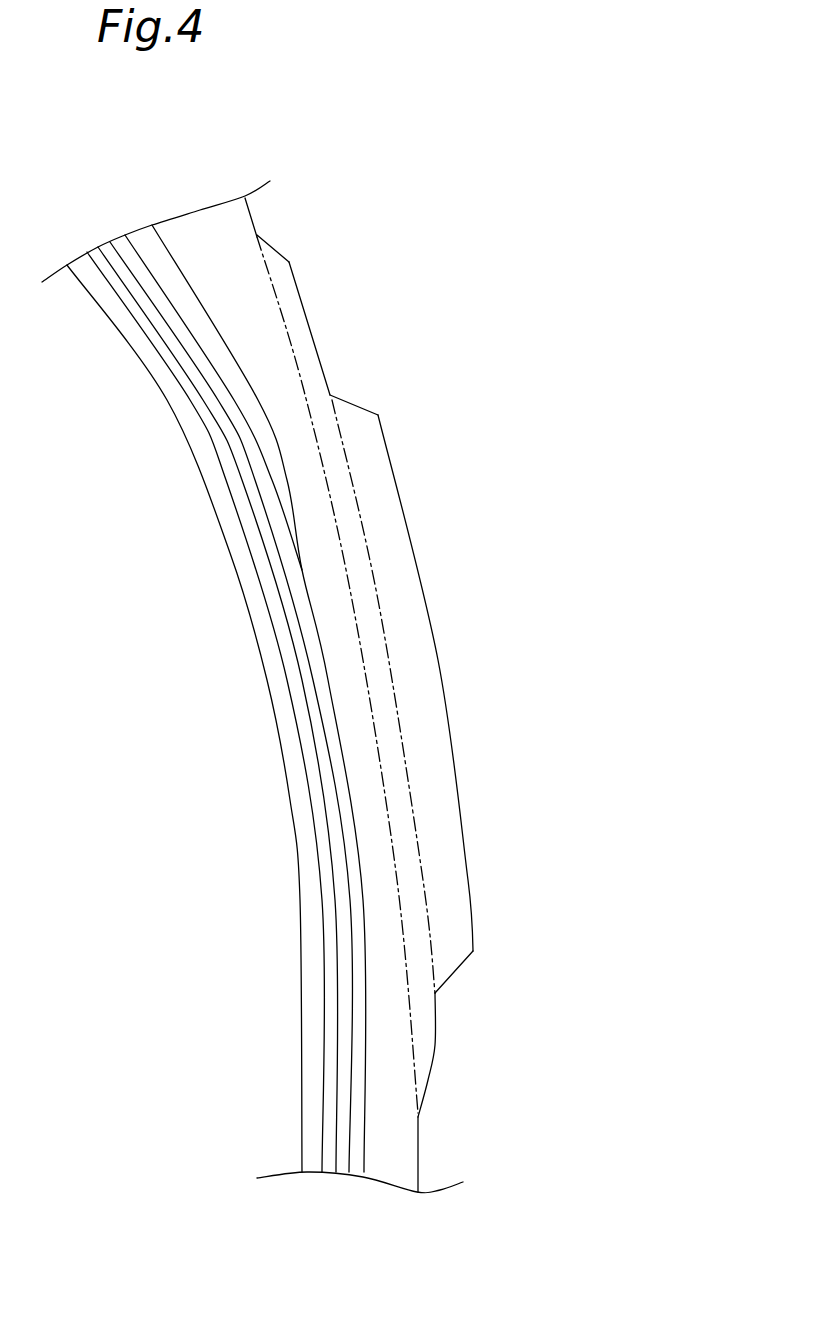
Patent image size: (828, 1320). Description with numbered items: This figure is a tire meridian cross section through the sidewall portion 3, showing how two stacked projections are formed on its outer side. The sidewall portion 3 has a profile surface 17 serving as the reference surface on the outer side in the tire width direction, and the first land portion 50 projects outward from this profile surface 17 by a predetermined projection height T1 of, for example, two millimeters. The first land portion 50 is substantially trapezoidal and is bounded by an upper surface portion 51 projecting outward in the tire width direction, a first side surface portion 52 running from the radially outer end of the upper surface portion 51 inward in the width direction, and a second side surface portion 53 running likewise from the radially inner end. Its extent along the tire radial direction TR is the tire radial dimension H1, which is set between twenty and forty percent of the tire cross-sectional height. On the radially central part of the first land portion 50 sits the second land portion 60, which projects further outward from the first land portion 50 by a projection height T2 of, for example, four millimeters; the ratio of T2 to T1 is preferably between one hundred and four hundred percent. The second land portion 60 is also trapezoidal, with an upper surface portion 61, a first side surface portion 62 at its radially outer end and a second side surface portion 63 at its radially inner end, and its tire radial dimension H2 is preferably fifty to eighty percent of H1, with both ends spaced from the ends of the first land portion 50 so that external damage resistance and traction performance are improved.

The sidewall portion 3 is at (420, 1157).
The profile surface 17 is at (395, 853).
The first land portion 50 is at (398, 633).
The upper surface portion 51 is at (297, 293).
The first side surface portion 52 is at (273, 250).
The second side surface portion 53 is at (425, 1090).
The second land portion 60 is at (431, 704).
The upper surface portion 61 is at (395, 465).
The first side surface portion 62 is at (362, 400).
The second side surface portion 63 is at (458, 972).
The projection height of first land portion T1 is at (335, 680).
The projection height of second land portion T2 is at (357, 738).
The tire radial dimension of first land portion H1 is at (257, 231).
The tire radial dimension of second land portion H2 is at (331, 394).
The tire radial direction TR is at (154, 767).